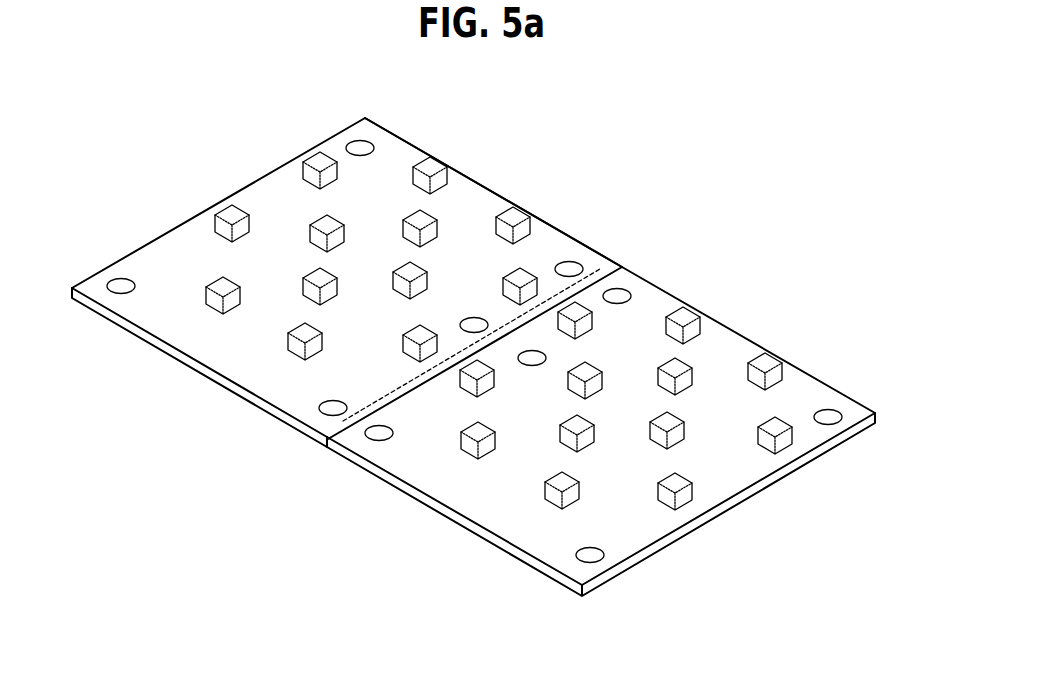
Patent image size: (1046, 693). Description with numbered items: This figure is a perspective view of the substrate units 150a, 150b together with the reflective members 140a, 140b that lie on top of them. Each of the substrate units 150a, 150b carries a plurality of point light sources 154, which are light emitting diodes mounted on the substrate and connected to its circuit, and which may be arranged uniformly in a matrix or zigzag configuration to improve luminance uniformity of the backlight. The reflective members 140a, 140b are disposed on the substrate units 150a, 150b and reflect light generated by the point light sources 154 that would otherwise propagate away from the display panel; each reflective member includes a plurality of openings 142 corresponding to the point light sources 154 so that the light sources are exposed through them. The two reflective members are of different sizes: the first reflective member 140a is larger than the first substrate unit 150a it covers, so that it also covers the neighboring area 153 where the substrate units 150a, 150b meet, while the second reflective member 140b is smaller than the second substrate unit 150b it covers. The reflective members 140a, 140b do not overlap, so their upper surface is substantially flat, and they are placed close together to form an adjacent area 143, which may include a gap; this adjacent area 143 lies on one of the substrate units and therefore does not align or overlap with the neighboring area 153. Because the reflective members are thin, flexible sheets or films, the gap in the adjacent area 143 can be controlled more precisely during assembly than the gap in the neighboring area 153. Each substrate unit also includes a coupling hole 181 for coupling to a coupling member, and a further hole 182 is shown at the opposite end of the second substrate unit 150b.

The first reflective member 140a is at (362, 275).
The second reflective member 140b is at (611, 406).
The openings 142 is at (450, 167).
The adjacent area 143 is at (613, 268).
The first substrate unit 150a is at (197, 372).
The second substrate unit 150b is at (450, 515).
The neighboring area 153 is at (600, 268).
The point light sources 154 is at (430, 167).
The coupling hole 181 is at (834, 413).
The alignment hole 182 is at (593, 558).